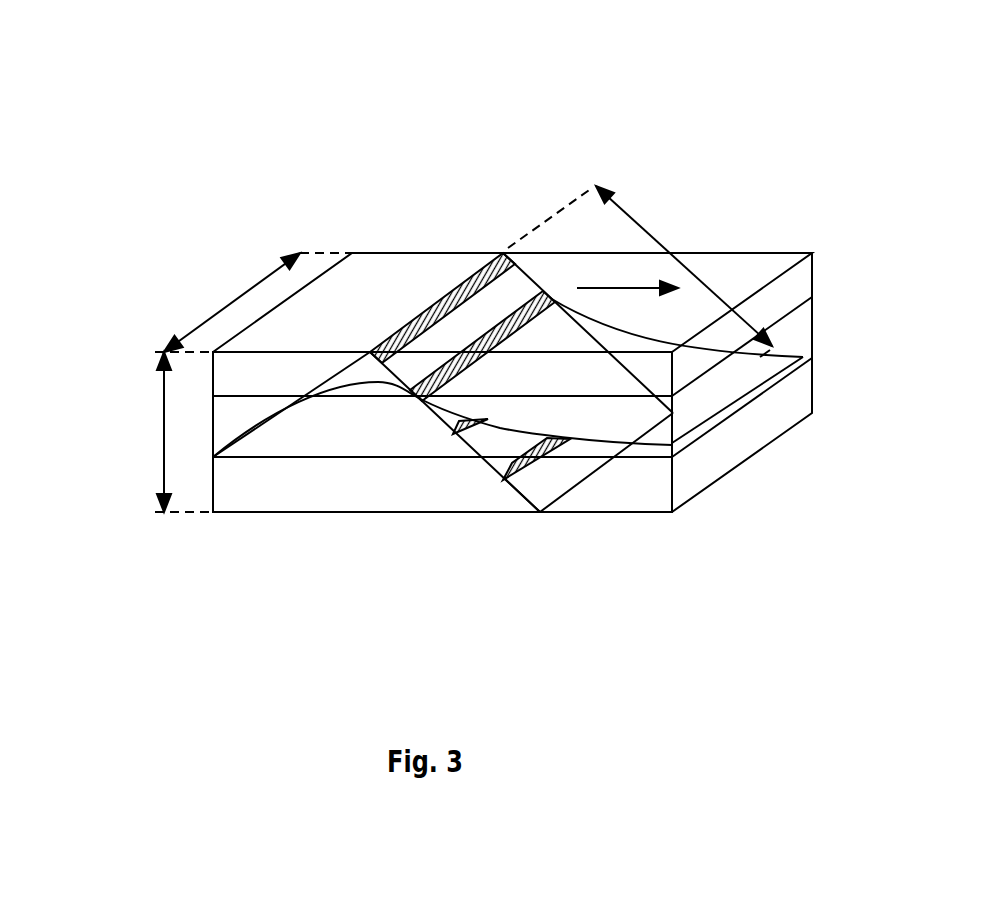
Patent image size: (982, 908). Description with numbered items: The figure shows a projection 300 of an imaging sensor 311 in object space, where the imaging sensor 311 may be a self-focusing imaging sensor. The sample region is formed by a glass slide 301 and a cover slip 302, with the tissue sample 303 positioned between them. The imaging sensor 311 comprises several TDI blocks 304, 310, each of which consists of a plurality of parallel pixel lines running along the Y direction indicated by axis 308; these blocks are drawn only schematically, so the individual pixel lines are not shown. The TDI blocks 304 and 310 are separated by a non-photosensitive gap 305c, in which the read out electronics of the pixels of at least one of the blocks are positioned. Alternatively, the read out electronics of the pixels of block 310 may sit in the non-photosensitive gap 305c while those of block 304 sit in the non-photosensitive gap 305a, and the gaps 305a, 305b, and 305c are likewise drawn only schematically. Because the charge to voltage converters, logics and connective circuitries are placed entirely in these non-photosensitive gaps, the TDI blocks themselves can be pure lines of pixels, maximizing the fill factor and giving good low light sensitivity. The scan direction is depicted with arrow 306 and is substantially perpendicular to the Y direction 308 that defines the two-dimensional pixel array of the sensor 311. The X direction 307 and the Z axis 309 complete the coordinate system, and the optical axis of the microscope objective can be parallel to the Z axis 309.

The projection 300 is at (490, 118).
The glass slide 301 is at (275, 495).
The cover slip 302 is at (268, 370).
The tissue sample 303 is at (547, 372).
The TDI block 304 is at (478, 447).
The non-photosensitive gap 305a is at (452, 433).
The non-photosensitive gap 305b is at (480, 272).
The non-photosensitive gap 305c is at (504, 485).
The scan direction 306 is at (637, 287).
The X direction 307 is at (620, 202).
The Y direction 308 is at (258, 283).
The Z axis 309 is at (163, 402).
The TDI block 310 is at (541, 487).
The imaging sensor 311 is at (597, 466).